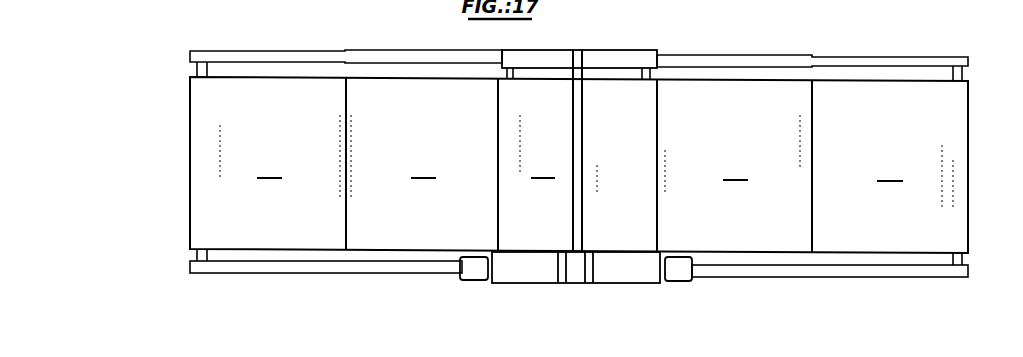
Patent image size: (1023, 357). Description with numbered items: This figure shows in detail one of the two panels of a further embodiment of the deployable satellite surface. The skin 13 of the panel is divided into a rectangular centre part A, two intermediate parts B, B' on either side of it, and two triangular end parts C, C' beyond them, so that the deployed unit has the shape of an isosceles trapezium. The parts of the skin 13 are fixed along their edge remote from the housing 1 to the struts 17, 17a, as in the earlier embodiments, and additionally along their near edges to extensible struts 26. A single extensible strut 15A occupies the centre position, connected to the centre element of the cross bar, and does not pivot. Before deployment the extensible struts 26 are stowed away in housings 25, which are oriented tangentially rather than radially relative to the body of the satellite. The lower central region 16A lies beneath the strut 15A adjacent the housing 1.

The skin 13 is at (972, 118).
The strut 17a is at (367, 60).
The strut 17 is at (613, 55).
The extensible strut 15A is at (577, 148).
The housing 1 is at (525, 263).
The lower partition 16A is at (578, 263).
The housing 25 is at (474, 262).
The extensible strut 26 is at (372, 265).